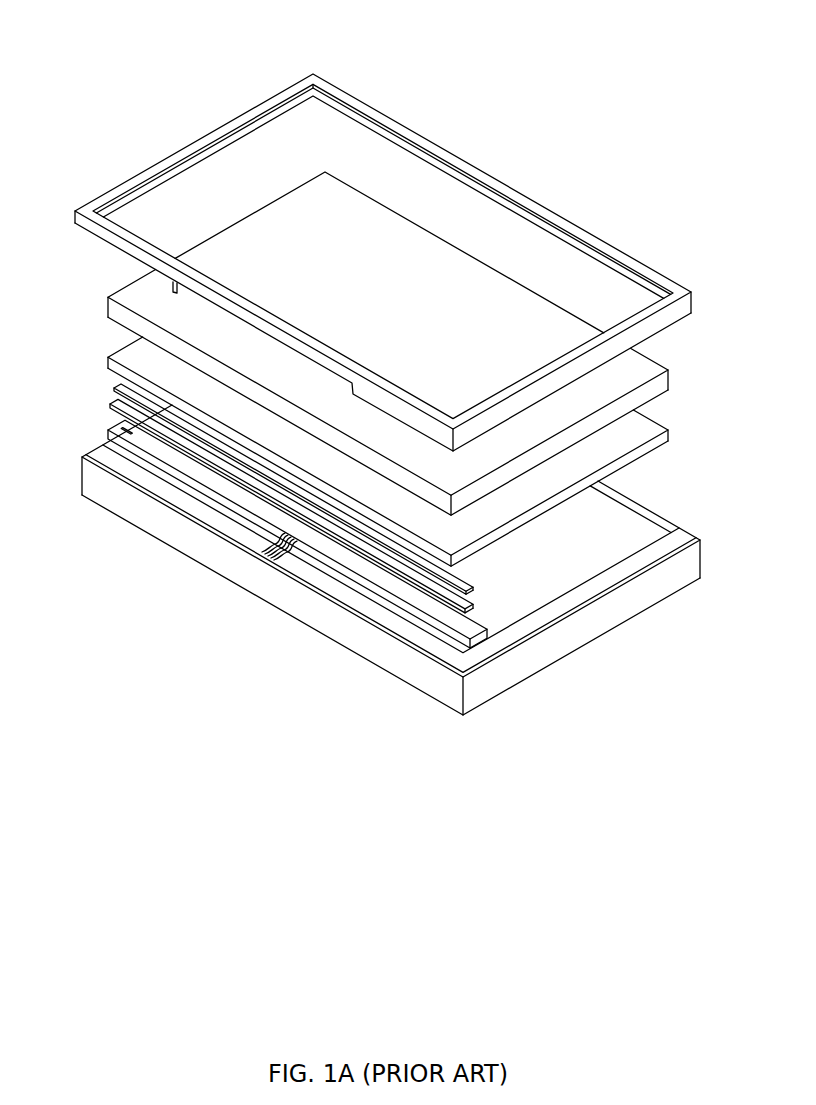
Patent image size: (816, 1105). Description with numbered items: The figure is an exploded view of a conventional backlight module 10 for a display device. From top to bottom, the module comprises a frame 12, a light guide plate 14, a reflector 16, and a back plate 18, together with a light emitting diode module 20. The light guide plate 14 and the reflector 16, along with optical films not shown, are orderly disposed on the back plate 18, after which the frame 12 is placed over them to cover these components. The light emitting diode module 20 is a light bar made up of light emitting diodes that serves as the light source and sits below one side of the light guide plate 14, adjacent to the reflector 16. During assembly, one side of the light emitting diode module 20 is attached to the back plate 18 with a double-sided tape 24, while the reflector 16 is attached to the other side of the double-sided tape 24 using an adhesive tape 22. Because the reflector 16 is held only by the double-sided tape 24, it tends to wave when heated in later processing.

The backlight module 10 is at (133, 33).
The frame 12 is at (628, 260).
The light guide plate 14 is at (651, 368).
The reflector 16 is at (650, 432).
The back plate 18 is at (665, 578).
The light emitting diode module 20 is at (109, 431).
The adhesive tape 22 is at (111, 405).
The double-sided tape 24 is at (116, 389).